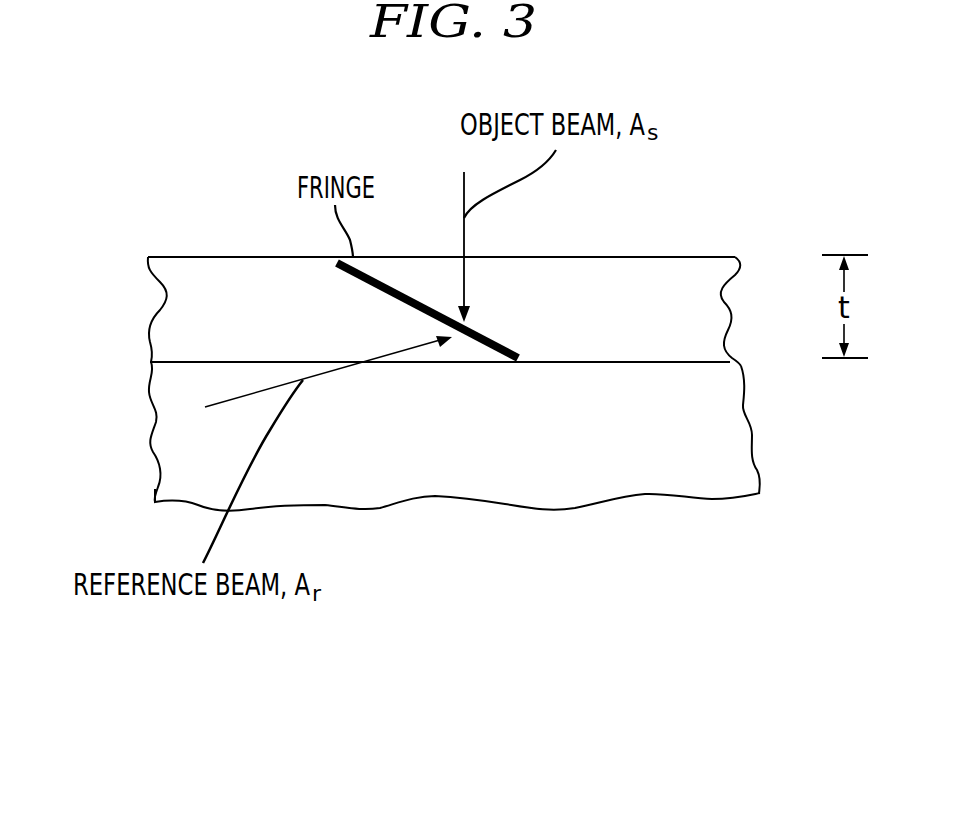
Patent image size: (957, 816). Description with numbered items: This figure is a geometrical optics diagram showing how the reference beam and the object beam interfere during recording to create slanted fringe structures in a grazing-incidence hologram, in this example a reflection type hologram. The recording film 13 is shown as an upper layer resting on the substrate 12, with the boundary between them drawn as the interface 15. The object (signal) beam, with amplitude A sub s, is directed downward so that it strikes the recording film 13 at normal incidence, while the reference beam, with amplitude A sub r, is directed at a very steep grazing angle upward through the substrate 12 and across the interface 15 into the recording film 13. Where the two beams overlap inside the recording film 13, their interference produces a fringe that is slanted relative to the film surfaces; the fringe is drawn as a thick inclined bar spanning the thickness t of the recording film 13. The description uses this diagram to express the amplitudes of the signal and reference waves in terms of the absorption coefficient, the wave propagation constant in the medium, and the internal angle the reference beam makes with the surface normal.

The substrate 12 is at (511, 487).
The photosensitive layer 13 is at (666, 272).
The interface surface 15 is at (673, 358).